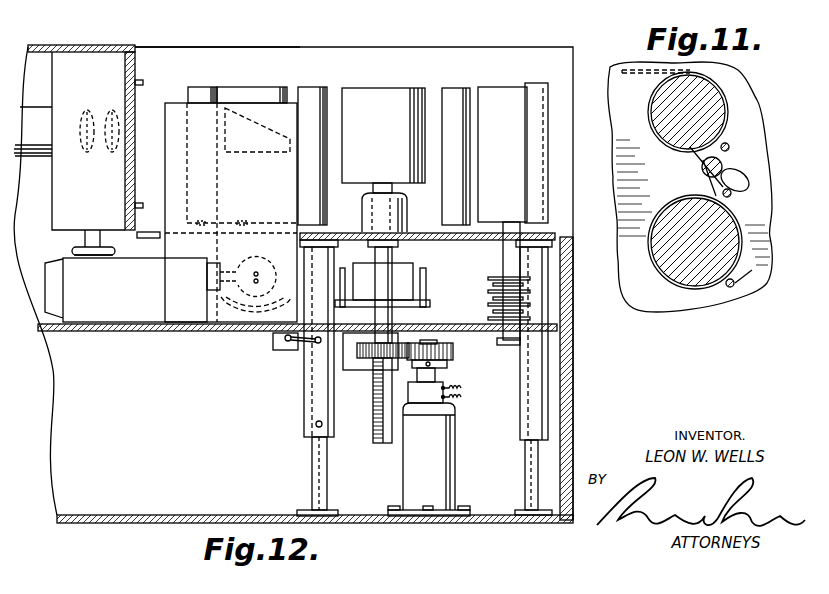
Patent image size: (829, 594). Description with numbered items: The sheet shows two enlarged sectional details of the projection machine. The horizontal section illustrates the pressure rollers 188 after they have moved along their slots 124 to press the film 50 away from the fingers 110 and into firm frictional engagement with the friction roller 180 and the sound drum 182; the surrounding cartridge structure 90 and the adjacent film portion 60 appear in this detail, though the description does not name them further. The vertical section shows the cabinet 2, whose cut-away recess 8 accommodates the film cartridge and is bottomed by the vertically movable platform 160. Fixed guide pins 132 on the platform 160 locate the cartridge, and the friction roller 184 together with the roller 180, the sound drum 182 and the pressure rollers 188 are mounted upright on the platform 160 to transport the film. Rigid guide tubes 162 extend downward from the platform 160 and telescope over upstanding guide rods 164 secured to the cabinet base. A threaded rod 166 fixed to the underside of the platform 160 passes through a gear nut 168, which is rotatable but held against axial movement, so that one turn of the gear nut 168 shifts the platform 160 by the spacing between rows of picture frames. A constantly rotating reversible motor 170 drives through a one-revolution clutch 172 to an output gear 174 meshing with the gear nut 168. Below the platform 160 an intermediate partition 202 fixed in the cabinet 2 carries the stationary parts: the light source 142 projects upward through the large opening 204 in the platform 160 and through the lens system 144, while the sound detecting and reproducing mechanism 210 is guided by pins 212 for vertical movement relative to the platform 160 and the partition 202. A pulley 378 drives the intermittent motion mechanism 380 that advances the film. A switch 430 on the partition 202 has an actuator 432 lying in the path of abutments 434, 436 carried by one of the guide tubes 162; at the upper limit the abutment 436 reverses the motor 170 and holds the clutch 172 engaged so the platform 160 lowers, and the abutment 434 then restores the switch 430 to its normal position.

In FIG. 12, the cabinet 2 is at (180, 47).
In FIG. 12, the recess 8 is at (262, 47).
In FIG. 11, the film 50 is at (637, 80).
In FIG. 11, the card 60 is at (680, 202).
In FIG. 11, the platen block 90 is at (740, 103).
In FIG. 11, the fingers 110 is at (728, 144).
In FIG. 11, the slots 124 is at (752, 183).
In FIG. 12, the guide pins 132 is at (535, 94).
In FIG. 12, the light source 142 is at (173, 113).
In FIG. 12, the lens system 144 is at (110, 110).
In FIG. 12, the platform 160 is at (553, 238).
In FIG. 12, the guide tubes 162 is at (312, 397).
In FIG. 12, the guide rods 164 is at (314, 476).
In FIG. 12, the threaded rod 166 is at (373, 407).
In FIG. 12, the gear nut 168 is at (370, 360).
In FIG. 12, the reversible motor 170 is at (408, 470).
In FIG. 12, the one-revolution clutch 172 is at (427, 395).
In FIG. 12, the output gear 174 is at (453, 352).
In FIG. 12, the friction roller 180 is at (500, 93).
In FIG. 11, the friction roller 180 is at (680, 137).
In FIG. 12, the sound drum 182 is at (403, 93).
In FIG. 11, the sound drum 182 is at (672, 205).
In FIG. 12, the friction roller 184 is at (243, 92).
In FIG. 12, the pressure rollers 188 is at (197, 90).
In FIG. 11, the pressure rollers 188 is at (737, 172).
In FIG. 12, the intermediate partition 202 is at (148, 331).
In FIG. 12, the opening 204 is at (300, 238).
In FIG. 12, the sound detecting and reproducing mechanism 210 is at (405, 270).
In FIG. 12, the pins 212 is at (428, 284).
In FIG. 12, the pulley 378 is at (72, 250).
In FIG. 12, the intermittent motion mechanism 380 is at (72, 188).
In FIG. 12, the switch 430 is at (273, 341).
In FIG. 12, the actuator 432 is at (300, 345).
In FIG. 12, the abutment 434 is at (312, 345).
In FIG. 12, the abutment 436 is at (316, 425).